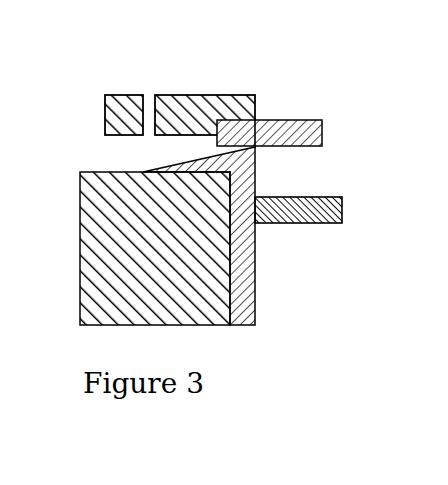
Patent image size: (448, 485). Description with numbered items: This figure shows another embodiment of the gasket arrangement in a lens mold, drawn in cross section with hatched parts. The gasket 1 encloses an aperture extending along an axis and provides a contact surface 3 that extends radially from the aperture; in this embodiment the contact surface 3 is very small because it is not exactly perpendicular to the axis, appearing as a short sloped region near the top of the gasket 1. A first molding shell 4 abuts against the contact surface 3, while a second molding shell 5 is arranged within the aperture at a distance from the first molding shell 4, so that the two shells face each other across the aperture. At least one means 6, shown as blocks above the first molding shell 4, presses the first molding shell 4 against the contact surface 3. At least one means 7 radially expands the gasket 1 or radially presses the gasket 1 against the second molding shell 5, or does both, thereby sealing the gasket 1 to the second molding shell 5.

The gasket 1 is at (255, 310).
The contact surface 3 is at (258, 120).
The first molding shell 4 is at (322, 128).
The second molding shell 5 is at (310, 225).
The means for pressing the first molding shell 6 is at (203, 108).
The means for radially expanding or pressing the gasket 7 is at (118, 192).